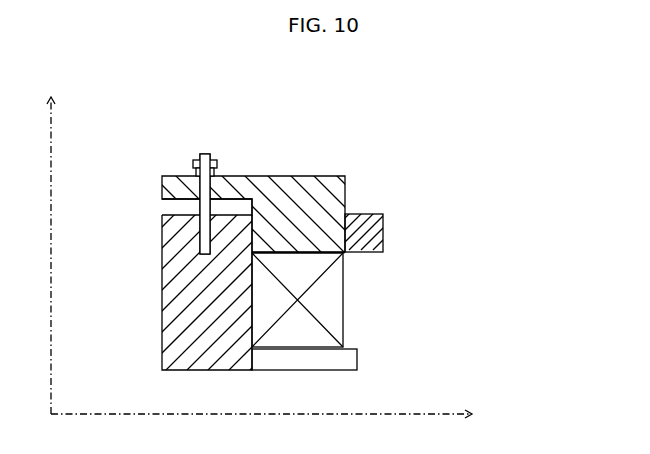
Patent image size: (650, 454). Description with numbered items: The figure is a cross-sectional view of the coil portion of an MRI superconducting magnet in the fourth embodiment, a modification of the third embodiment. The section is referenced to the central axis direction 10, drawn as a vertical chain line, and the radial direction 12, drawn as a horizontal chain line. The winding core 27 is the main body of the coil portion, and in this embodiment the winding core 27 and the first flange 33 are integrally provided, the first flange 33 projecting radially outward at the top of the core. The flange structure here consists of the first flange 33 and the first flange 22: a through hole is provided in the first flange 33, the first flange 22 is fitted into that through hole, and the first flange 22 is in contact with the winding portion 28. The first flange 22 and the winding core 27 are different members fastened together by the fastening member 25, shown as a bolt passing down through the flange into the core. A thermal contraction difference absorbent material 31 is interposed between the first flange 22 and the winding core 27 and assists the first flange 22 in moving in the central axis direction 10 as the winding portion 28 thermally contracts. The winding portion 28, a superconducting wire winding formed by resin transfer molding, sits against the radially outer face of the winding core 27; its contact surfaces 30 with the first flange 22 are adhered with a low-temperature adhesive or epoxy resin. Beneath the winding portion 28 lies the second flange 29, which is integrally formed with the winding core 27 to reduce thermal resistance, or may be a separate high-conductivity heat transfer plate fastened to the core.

The central axis direction 10 is at (41, 244).
The radial direction 12 is at (277, 414).
The first flange 22 is at (330, 182).
The fastening member 25 is at (203, 153).
The winding core 27 is at (180, 313).
The winding portion 28 is at (327, 313).
The second flange 29 is at (302, 365).
The contact surfaces 30 is at (300, 254).
The thermal contraction difference absorbent material 31 is at (177, 208).
The first flange 33 is at (372, 224).